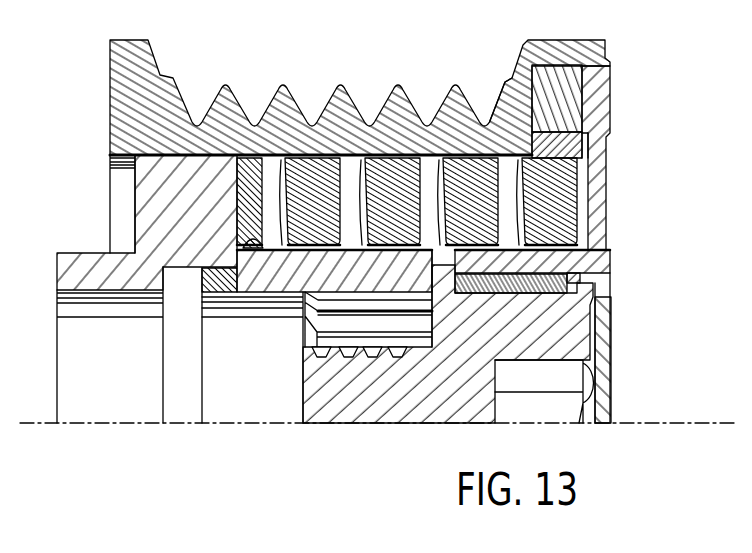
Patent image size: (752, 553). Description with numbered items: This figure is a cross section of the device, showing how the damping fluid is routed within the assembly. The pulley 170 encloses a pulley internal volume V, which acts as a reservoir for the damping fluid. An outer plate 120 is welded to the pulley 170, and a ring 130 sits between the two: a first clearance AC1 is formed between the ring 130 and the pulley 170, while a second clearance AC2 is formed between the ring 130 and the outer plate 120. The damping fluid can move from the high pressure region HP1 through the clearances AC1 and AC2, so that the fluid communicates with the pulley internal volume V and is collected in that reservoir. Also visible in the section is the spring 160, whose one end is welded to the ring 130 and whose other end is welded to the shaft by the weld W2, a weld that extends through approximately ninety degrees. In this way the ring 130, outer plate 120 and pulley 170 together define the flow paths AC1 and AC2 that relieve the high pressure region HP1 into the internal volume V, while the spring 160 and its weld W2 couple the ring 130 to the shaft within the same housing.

The outer plate 120 is at (602, 200).
The ring 130 is at (558, 140).
The spring 160 is at (552, 203).
The pulley 170 is at (340, 83).
The high pressure region HP1 is at (562, 92).
The clearance AC1 is at (522, 138).
The clearance AC2 is at (582, 150).
The weld W2 is at (213, 177).
The pulley internal volume V is at (365, 210).